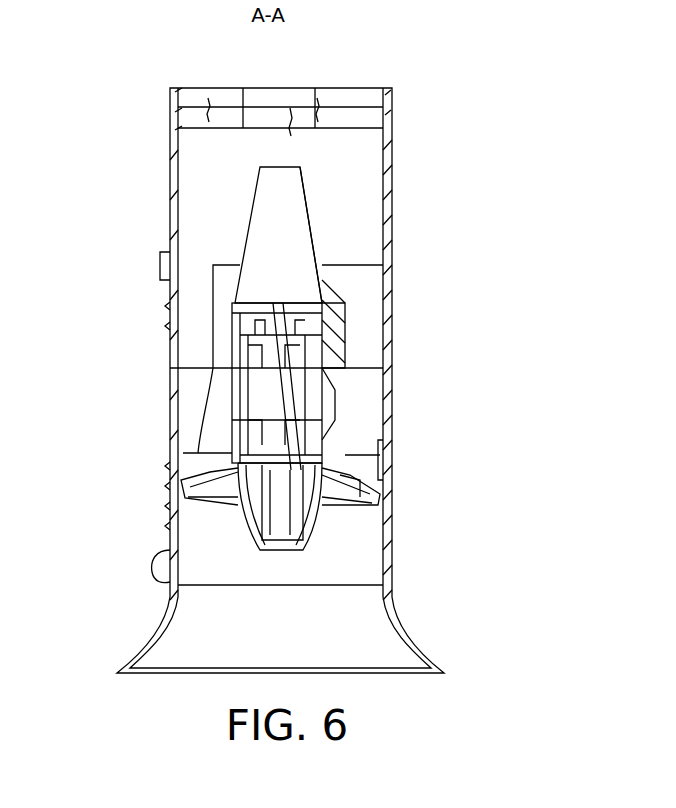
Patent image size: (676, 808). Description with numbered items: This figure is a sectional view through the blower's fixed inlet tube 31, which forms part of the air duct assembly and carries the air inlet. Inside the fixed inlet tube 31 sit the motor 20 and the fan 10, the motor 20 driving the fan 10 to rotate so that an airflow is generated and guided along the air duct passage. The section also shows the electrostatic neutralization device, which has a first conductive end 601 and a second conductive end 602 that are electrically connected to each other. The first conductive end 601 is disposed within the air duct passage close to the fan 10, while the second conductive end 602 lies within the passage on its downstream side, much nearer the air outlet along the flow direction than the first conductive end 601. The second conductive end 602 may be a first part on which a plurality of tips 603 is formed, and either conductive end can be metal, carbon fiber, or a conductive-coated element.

The fan 10 is at (383, 498).
The motor 20 is at (314, 385).
The fixed inlet tube 31 is at (386, 207).
The first conductive end 601 is at (376, 470).
The second conductive end 602 is at (346, 104).
The tips 603 is at (234, 140).